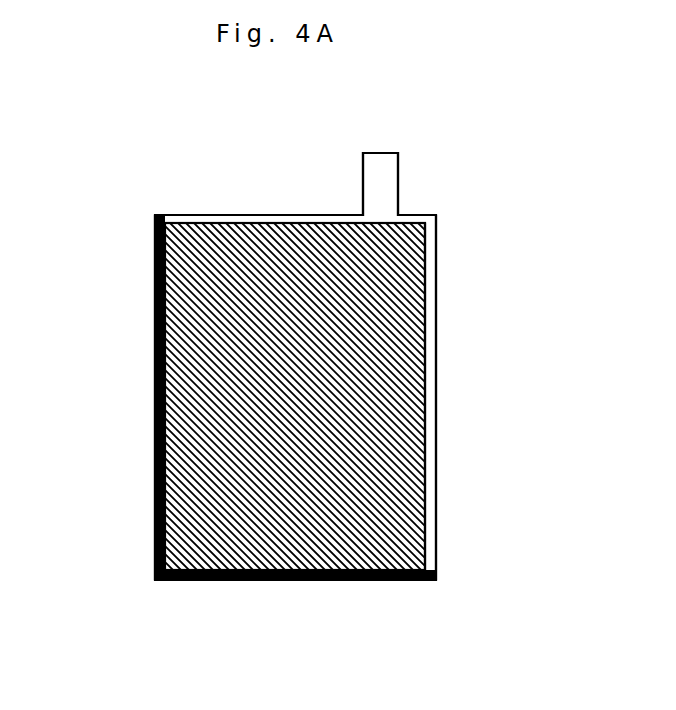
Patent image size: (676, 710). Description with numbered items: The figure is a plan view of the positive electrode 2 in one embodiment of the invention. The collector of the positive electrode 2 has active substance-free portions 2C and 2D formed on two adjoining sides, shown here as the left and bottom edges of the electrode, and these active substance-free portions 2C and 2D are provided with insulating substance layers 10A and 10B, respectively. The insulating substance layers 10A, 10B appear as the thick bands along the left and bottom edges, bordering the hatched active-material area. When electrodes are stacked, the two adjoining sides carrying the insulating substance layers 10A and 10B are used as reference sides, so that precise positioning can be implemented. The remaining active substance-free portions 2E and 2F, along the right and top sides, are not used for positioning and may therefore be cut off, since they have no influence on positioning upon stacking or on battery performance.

The positive electrode 2 is at (90, 118).
The active substance-free portion 2C is at (140, 305).
The active substance-free portion 2D is at (263, 578).
The active substance-free portion 2E is at (430, 415).
The active substance-free portion 2F is at (268, 205).
The insulating substance layer 10A is at (147, 433).
The insulating substance layer 10B is at (293, 572).